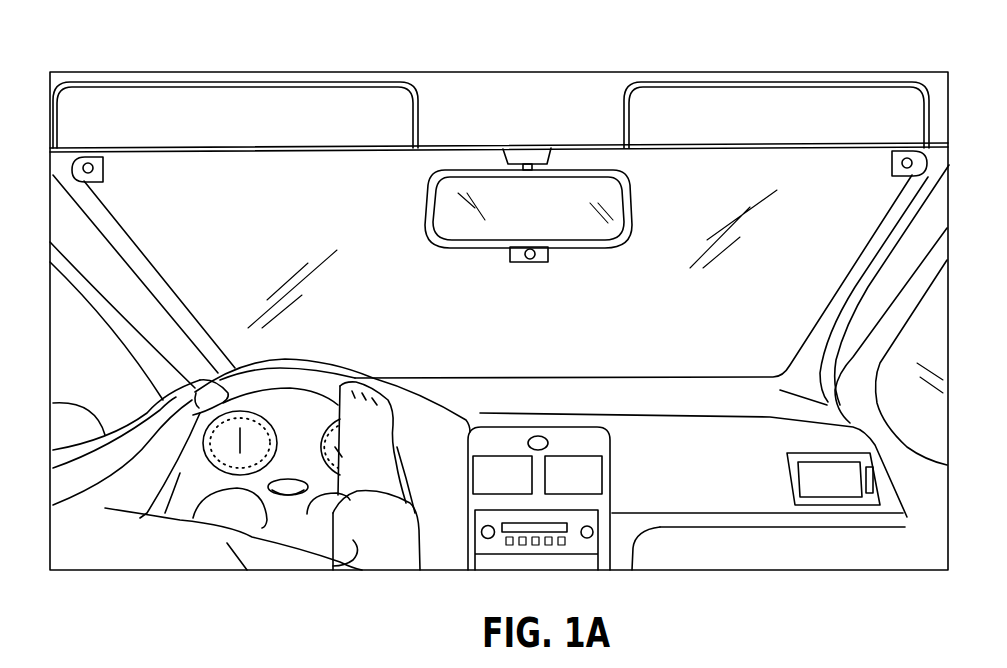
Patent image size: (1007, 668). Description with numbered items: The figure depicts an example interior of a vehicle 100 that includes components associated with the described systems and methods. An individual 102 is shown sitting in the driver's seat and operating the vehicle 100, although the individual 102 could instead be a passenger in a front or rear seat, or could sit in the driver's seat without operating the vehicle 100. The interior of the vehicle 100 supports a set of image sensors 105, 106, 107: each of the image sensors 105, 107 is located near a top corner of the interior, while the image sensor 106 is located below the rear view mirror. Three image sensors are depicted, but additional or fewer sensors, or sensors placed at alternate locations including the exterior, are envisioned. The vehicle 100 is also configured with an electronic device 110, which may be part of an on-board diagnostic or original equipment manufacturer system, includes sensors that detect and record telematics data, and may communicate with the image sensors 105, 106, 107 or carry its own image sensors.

The vehicle 100 is at (582, 39).
The individual 102 is at (121, 551).
The image sensor 105 is at (104, 168).
The image sensor 106 is at (530, 263).
The image sensor 107 is at (892, 166).
The electronic device 110 is at (574, 438).